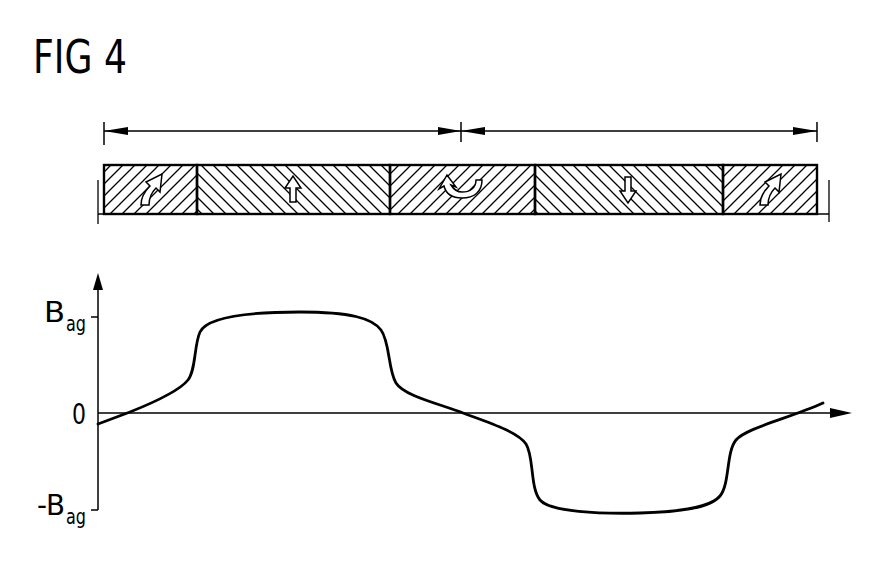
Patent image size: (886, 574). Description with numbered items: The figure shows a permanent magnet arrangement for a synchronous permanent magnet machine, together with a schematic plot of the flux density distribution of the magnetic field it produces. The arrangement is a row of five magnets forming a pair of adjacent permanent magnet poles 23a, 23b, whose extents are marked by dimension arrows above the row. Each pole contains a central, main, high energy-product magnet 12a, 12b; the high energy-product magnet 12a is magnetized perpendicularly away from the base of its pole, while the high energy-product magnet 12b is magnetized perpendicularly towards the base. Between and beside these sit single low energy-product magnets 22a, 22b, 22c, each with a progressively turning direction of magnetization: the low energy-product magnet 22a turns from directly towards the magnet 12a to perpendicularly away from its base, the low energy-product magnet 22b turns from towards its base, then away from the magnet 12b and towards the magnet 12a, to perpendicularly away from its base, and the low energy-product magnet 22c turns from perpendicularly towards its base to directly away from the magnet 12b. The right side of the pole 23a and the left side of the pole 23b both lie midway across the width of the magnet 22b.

The permanent magnet pole 23a is at (273, 131).
The permanent magnet pole 23b is at (640, 131).
The low energy-product magnet 22a is at (168, 216).
The high energy-product magnet 12a is at (270, 216).
The low energy-product magnet 22b is at (481, 216).
The high energy-product magnet 12b is at (587, 216).
The low energy-product magnet 22c is at (785, 216).